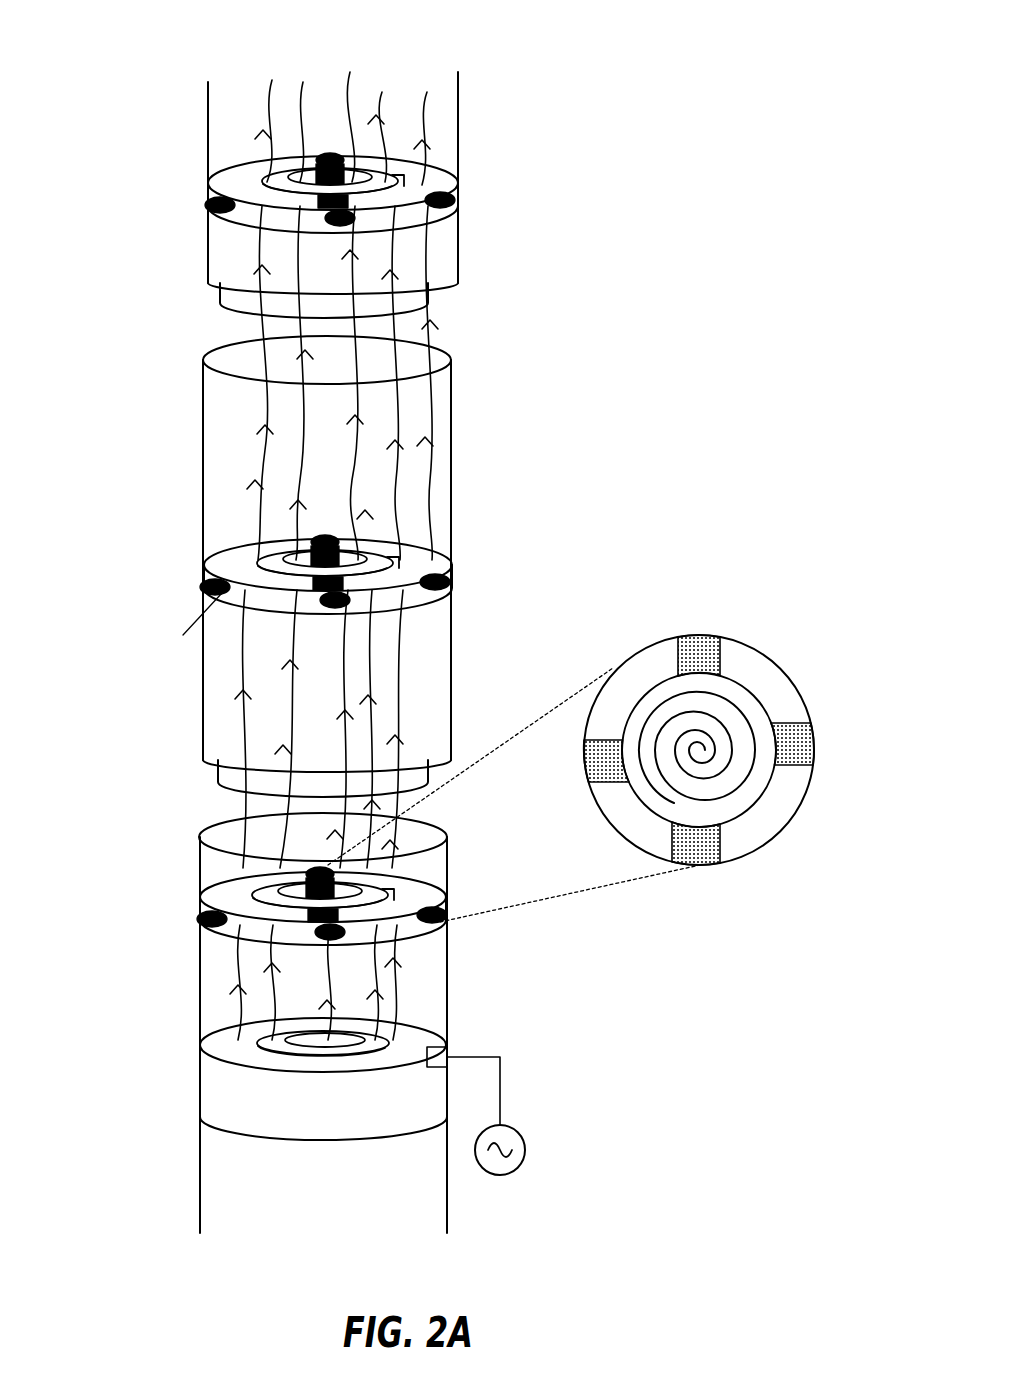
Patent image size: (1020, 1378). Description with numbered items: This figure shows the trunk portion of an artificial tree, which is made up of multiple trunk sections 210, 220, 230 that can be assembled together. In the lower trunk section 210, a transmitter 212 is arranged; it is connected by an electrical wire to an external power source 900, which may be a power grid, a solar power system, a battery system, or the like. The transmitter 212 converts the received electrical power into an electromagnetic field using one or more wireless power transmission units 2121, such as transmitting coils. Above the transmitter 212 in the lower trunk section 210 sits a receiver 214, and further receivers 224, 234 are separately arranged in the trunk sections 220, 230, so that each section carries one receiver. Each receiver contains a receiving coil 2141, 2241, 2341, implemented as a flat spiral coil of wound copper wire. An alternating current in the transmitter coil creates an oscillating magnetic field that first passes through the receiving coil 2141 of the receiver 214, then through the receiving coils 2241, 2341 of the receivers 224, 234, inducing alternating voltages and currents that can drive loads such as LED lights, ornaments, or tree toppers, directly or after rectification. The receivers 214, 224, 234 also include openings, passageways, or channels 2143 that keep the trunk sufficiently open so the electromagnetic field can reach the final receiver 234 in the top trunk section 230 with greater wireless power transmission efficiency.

The lower trunk section 210 is at (160, 835).
The transmitter 212 is at (413, 1105).
The wireless power transmission unit 2121 is at (373, 1040).
The receiver 214 is at (405, 923).
The receiving coil 2141 is at (372, 888).
The openings, passageways, or channels 2143 is at (628, 675).
The trunk section 220 is at (157, 375).
The receiver 224 is at (438, 582).
The receiving coil 2241 is at (380, 557).
The trunk section 230 is at (160, 51).
The receiver 234 is at (441, 201).
The receiving coil 2341 is at (378, 177).
The external power source 900 is at (526, 1147).